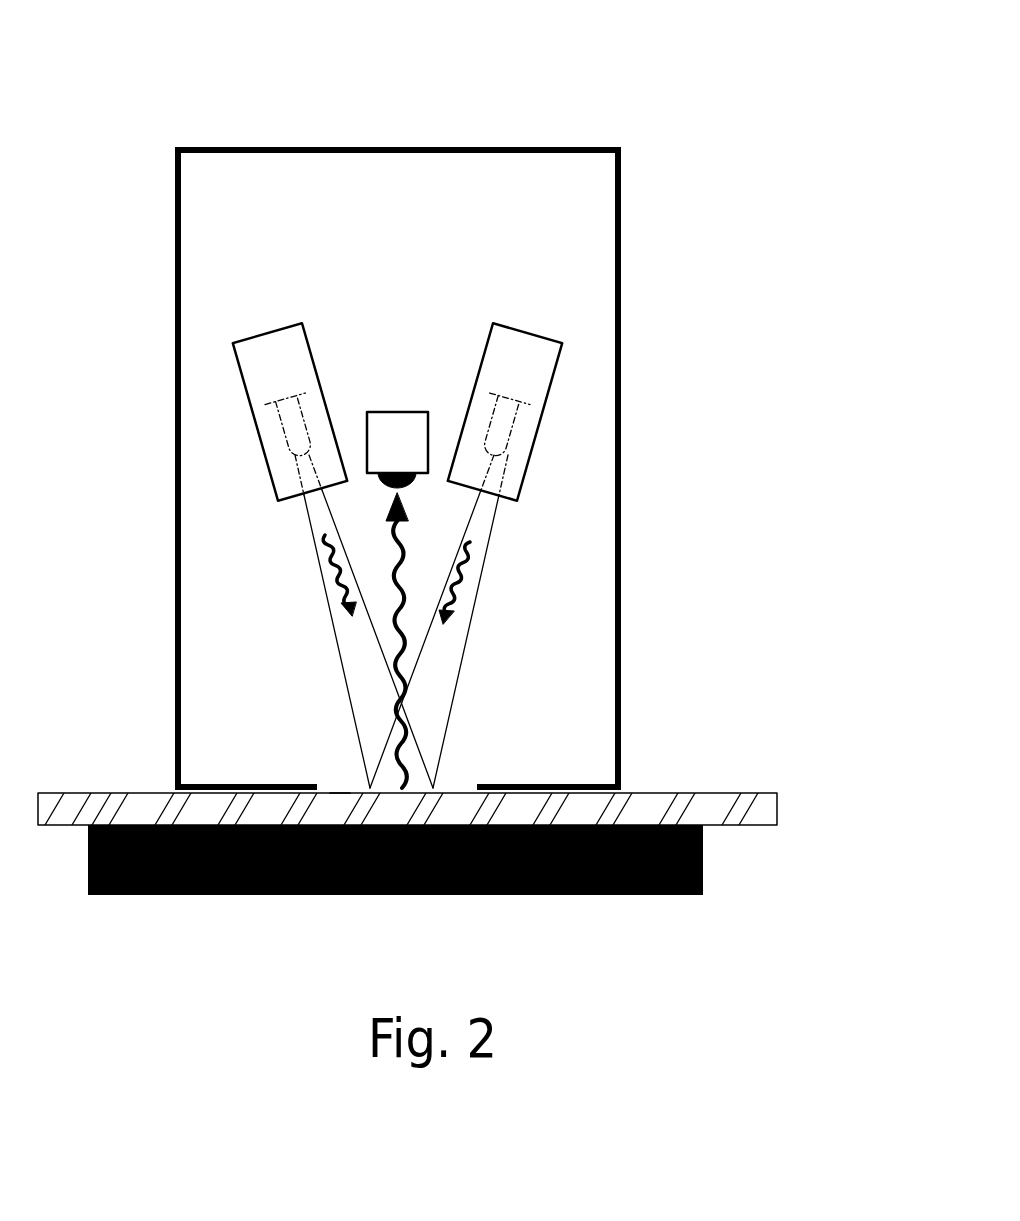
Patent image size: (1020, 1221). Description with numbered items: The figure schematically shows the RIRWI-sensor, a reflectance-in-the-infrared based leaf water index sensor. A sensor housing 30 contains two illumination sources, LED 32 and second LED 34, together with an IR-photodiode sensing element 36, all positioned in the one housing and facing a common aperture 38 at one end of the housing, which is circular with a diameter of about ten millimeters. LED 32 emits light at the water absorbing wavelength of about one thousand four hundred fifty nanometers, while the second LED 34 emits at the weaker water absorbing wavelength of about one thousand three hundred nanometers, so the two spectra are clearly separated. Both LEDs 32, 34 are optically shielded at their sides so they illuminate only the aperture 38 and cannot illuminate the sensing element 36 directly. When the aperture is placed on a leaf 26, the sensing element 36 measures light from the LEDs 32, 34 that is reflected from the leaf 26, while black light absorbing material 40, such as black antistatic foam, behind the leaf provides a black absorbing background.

The leaf 26 is at (703, 792).
The sensor housing 30 is at (618, 198).
The LED 32 is at (513, 430).
The second LED 34 is at (283, 428).
The IR-photodiode sensing element 36 is at (392, 412).
The aperture 38 is at (340, 788).
The black light absorbing material 40 is at (377, 895).